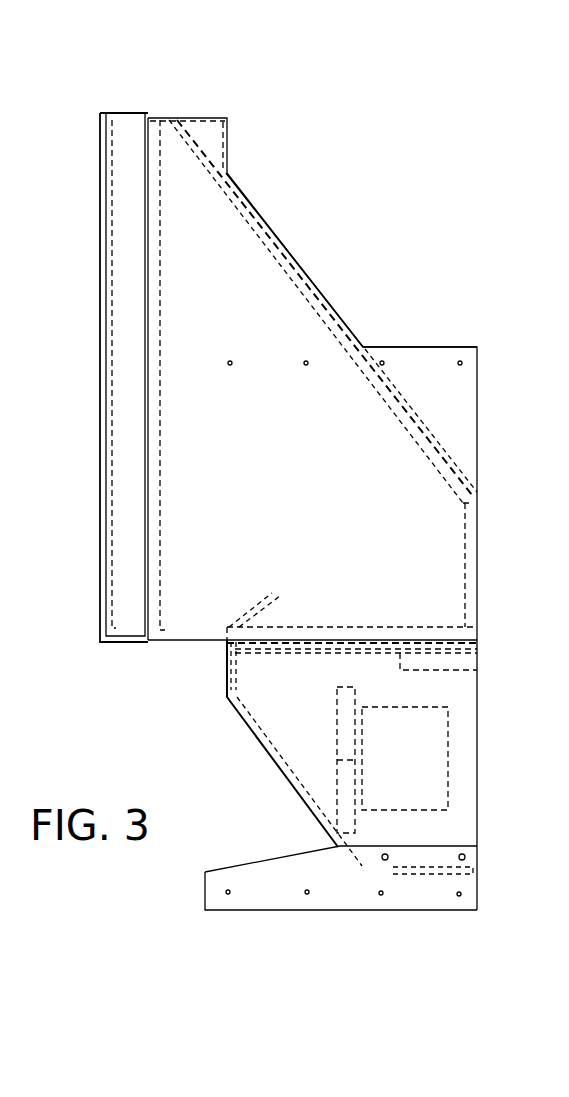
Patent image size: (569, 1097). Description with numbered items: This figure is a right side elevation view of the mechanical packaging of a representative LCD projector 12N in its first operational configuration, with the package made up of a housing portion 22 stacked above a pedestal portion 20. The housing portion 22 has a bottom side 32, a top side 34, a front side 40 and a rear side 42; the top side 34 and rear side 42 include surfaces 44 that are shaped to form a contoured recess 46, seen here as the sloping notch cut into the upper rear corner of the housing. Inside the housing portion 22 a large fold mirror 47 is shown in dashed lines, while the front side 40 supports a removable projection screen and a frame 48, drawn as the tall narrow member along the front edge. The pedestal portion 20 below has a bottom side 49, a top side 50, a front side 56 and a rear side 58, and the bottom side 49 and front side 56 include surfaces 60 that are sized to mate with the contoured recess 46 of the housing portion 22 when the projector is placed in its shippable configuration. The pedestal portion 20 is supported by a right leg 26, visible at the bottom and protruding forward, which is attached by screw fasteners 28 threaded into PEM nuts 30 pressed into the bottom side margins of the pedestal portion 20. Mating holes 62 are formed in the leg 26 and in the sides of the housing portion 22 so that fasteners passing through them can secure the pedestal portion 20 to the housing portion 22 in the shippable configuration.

The LCD projector 12N is at (97, 143).
The pedestal portion 20 is at (325, 728).
The housing portion 22 is at (288, 473).
The right leg 26 is at (260, 873).
The screw fasteners 28 is at (387, 860).
The PEM nuts 30 is at (462, 855).
The bottom side 32 is at (333, 637).
The top side 34 is at (172, 122).
The front side 40 is at (120, 400).
The rear side 42 is at (223, 140).
The surfaces 44 is at (228, 150).
The contoured recess 46 is at (367, 215).
The fold mirror 47 is at (417, 438).
The frame 48 is at (126, 496).
The bottom side 49 is at (374, 862).
The top side 50 is at (372, 630).
The front side 56 is at (237, 682).
The rear side 58 is at (472, 698).
The surfaces 60 is at (227, 672).
The mating holes 62 is at (380, 363).